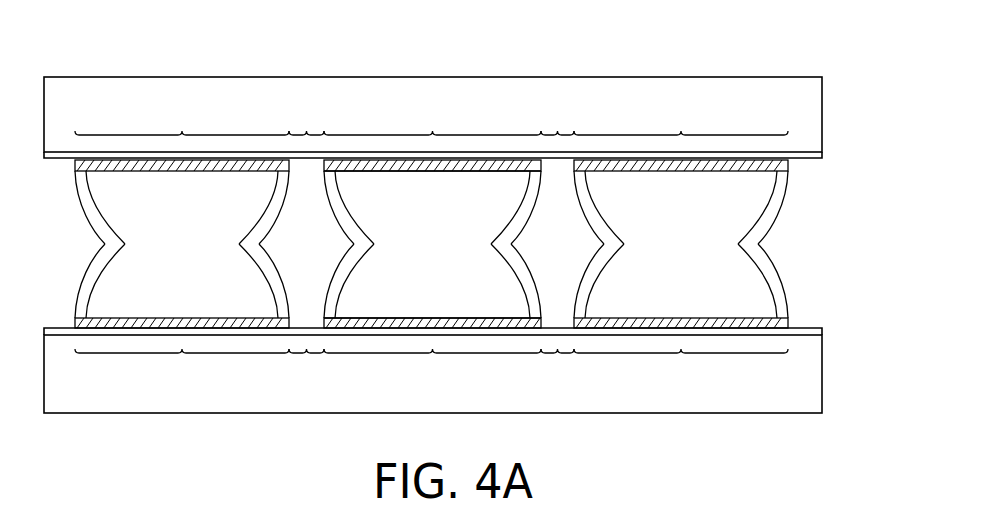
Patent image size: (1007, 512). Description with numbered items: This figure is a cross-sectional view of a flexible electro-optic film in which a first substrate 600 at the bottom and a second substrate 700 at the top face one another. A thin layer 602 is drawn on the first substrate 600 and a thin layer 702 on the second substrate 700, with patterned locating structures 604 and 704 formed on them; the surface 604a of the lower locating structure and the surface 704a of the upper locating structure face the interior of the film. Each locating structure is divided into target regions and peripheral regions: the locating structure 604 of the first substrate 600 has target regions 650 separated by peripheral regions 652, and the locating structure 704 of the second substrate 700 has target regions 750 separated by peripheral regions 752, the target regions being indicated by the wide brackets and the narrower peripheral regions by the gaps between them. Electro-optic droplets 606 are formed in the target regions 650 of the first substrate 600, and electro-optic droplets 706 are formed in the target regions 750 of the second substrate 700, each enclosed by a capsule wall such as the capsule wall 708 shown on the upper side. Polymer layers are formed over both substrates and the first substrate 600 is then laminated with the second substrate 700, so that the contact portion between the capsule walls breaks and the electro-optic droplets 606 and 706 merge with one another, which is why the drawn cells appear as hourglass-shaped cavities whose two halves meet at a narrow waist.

The first substrate 600 is at (806, 382).
The second electrode layer 602 is at (818, 333).
The locating structure 604 is at (790, 318).
The top surface of second electrode layer 604a is at (471, 317).
The electro-optic droplet 606 is at (723, 283).
The target region 650 is at (431, 369).
The peripheral region 652 is at (433, 369).
The second substrate 700 is at (808, 107).
The first electrode layer 702 is at (813, 156).
The locating structure 704 is at (758, 166).
The bottom surface of first electrode pattern 704a is at (431, 172).
The electro-optic droplet 706 is at (663, 193).
The capsule wall 708 is at (578, 177).
The target region 750 is at (431, 119).
The peripheral region 752 is at (433, 119).